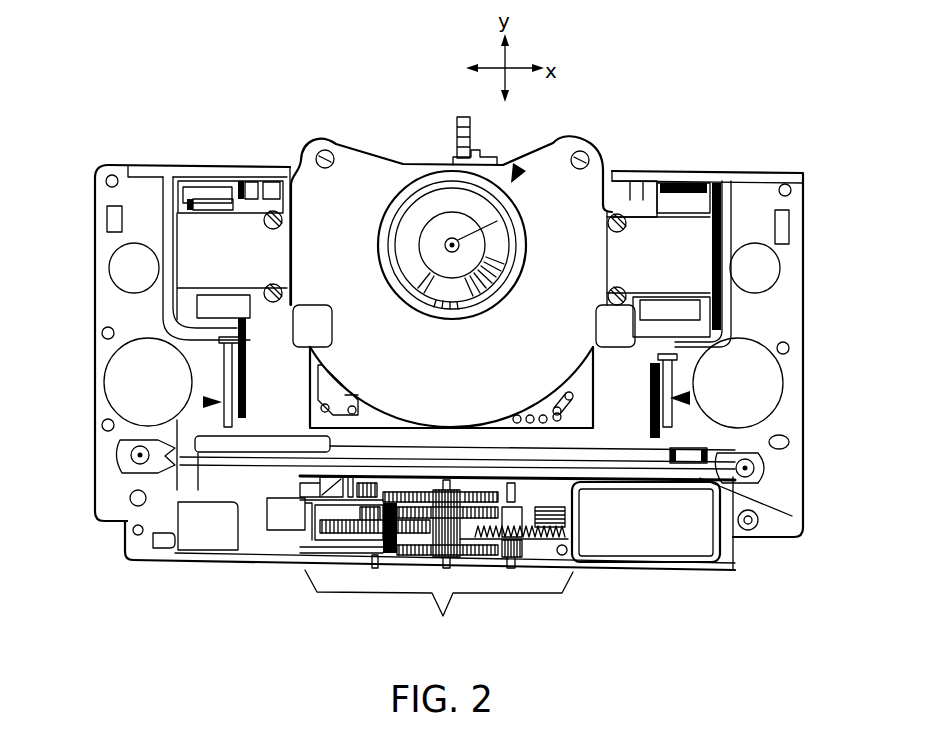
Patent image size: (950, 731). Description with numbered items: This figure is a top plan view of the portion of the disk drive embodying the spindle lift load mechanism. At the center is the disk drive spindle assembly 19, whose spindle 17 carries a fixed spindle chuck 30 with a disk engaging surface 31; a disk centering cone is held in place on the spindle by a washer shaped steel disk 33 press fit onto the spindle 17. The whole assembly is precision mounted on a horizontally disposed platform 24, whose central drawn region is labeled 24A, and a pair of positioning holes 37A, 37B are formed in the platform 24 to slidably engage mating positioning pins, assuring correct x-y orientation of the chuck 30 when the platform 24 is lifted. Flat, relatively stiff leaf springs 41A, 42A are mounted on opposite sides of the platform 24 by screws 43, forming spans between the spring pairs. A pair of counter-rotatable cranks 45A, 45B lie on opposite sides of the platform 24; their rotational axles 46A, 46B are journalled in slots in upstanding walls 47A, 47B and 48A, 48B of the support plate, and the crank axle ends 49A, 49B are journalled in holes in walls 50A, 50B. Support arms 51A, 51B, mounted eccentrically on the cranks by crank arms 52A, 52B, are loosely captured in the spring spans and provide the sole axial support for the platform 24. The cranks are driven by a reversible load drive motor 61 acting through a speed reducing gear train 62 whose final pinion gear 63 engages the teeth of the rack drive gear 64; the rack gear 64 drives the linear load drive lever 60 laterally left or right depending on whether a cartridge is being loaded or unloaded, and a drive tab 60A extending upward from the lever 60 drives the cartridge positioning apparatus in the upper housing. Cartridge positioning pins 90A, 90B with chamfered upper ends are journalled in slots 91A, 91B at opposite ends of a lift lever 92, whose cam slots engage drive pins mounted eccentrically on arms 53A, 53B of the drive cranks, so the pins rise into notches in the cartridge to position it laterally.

The spindle 17 is at (440, 248).
The disk drive spindle assembly 19 is at (519, 166).
The platform 24 is at (395, 157).
The rotary head drum 24A is at (478, 358).
The spindle chuck 30 is at (510, 236).
The disk engaging surface 31 is at (516, 273).
The washer shaped steel disk 33 is at (553, 143).
The positioning hole 37A is at (331, 158).
The positioning hole 37B is at (588, 158).
The leaf spring 41A is at (224, 192).
The leaf spring 42A is at (625, 182).
The screws 43 is at (269, 285).
The crank 45A is at (203, 401).
The crank 45B is at (692, 397).
The rotational axle 46A is at (300, 352).
The rotational axle 46B is at (598, 343).
The upstanding wall 47A is at (217, 350).
The upstanding wall 47B is at (680, 358).
The upstanding wall 48A is at (230, 422).
The upstanding wall 48B is at (683, 435).
The crank axle end 49A is at (230, 177).
The crank axle end 49B is at (653, 180).
The wall 50A is at (190, 163).
The wall 50B is at (707, 178).
The support arm 51A is at (180, 308).
The support arm 51B is at (717, 313).
The crank arm 52A is at (210, 207).
The crank arm 52B is at (745, 160).
The arm 53A is at (175, 460).
The arm 53B is at (760, 490).
The linear load drive lever 60 is at (292, 468).
The drive tab 60A is at (507, 465).
The load drive motor 61 is at (638, 535).
The speed reducing gear train 62 is at (439, 610).
The pinion gear 63 is at (480, 500).
The rack drive gear 64 is at (418, 483).
The cartridge positioning pin 90A is at (130, 456).
The cartridge positioning pin 90B is at (755, 465).
The slot 91A is at (128, 466).
The slot 91B is at (765, 480).
The lift lever 92 is at (183, 517).